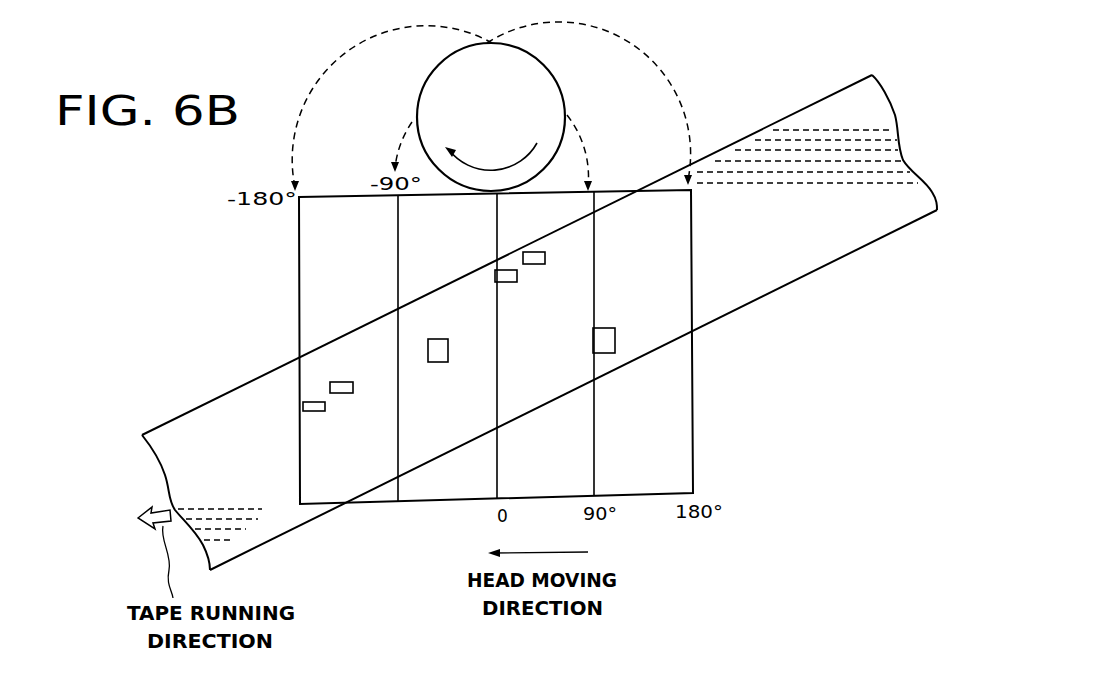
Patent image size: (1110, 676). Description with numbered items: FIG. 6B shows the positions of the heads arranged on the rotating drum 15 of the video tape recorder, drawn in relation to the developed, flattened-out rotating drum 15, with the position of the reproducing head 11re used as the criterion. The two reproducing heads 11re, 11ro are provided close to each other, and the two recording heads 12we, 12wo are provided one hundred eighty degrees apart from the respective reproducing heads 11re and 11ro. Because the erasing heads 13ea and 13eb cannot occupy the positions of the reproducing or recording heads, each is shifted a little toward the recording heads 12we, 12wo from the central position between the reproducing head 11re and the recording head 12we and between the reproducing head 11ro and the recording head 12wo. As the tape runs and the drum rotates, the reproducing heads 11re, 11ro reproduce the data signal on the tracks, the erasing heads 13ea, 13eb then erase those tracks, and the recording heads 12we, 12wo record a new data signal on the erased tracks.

The rotating drum 15 is at (562, 93).
The reproducing head 11re is at (507, 270).
The reproducing head 11ro is at (537, 252).
The recording head 12we is at (312, 402).
The recording head 12wo is at (338, 381).
The erasing head 13ea is at (600, 353).
The erasing head 13eb is at (437, 339).